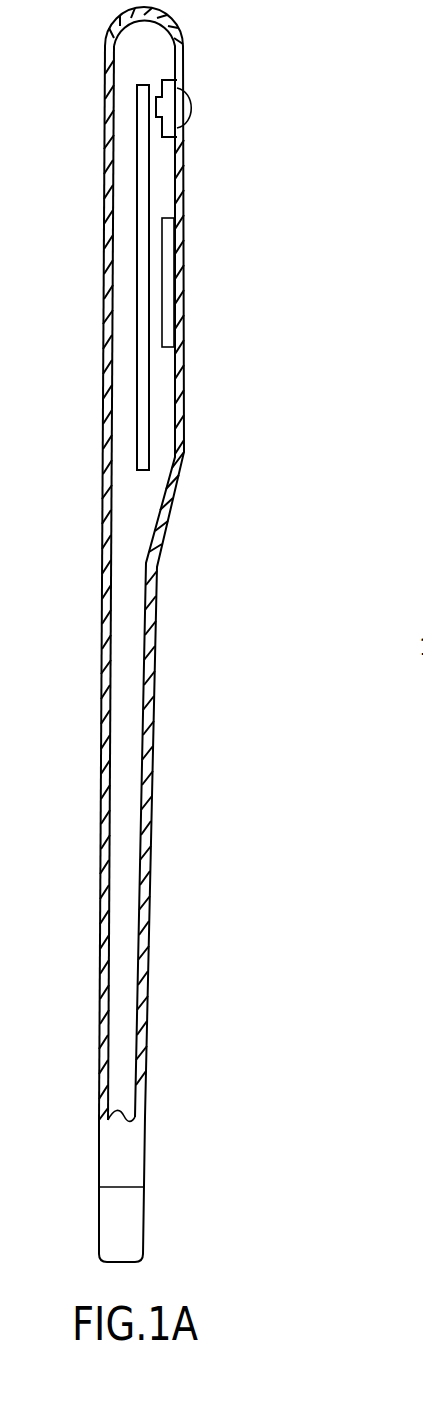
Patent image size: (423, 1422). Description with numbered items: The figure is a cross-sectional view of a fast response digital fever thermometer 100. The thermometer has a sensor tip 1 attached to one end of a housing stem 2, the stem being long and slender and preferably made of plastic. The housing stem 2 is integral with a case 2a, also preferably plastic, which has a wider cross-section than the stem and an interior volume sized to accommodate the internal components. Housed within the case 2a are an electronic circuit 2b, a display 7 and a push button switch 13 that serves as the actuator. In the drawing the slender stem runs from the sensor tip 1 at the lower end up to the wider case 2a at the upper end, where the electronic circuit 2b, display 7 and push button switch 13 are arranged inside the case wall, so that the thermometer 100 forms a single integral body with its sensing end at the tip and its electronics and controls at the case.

The digital fever thermometer 100 is at (310, 157).
The sensor tip 1 is at (142, 1227).
The housing stem 2 is at (150, 903).
The case 2a is at (105, 300).
The electronic circuit 2b is at (138, 172).
The display 7 is at (168, 268).
The push button switch 13 is at (183, 107).